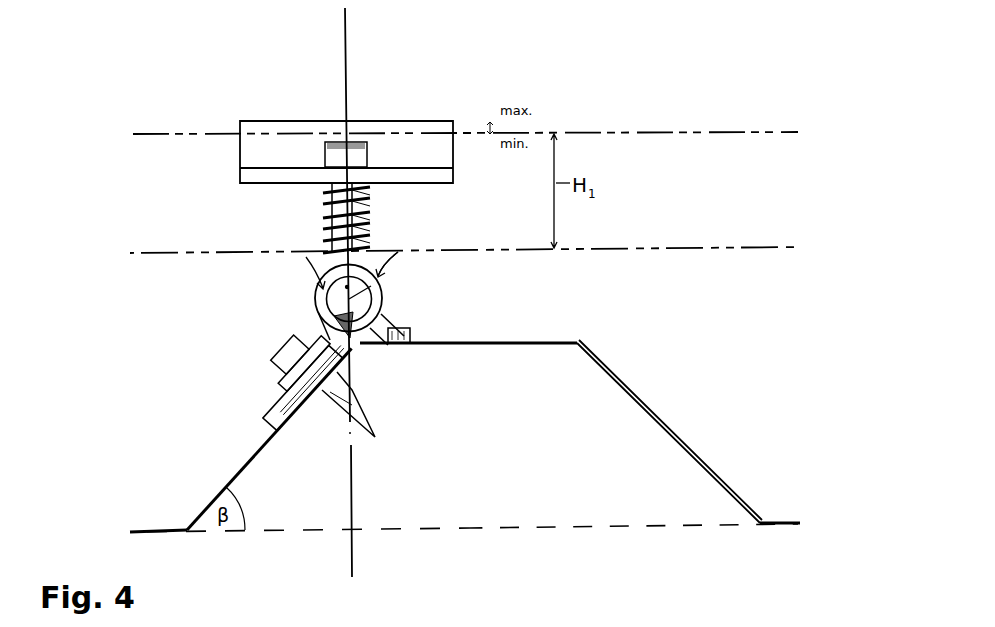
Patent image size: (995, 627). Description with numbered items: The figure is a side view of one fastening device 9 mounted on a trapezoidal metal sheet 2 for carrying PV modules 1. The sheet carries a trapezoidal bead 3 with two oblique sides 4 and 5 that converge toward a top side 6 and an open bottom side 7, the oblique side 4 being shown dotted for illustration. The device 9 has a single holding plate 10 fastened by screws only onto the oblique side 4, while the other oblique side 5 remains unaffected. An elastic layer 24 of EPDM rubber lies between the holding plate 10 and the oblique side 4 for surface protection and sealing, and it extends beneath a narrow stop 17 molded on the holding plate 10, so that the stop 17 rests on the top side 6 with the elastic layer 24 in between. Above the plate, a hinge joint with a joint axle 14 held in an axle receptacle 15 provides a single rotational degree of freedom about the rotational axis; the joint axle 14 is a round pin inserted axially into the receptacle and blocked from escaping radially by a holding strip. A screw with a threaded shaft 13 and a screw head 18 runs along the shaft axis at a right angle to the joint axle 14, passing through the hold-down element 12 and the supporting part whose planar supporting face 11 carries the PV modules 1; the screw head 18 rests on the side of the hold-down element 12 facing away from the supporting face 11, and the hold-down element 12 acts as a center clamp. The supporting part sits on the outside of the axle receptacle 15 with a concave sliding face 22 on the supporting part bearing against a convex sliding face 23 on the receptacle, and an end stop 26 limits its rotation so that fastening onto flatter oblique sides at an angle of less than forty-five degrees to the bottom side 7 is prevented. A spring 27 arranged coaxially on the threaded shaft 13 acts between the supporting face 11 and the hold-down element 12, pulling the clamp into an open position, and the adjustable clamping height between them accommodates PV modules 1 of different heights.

The PV module 1 is at (610, 130).
The trapezoidal metal sheet 2 is at (382, 300).
The trapezoidal bead 3 is at (480, 432).
The oblique side 4 is at (233, 487).
The oblique side 5 is at (668, 427).
The top side 6 is at (540, 343).
The bottom side 7 is at (585, 528).
The device 9 is at (227, 224).
The holding plate 10 is at (268, 400).
The supporting face 11 is at (370, 197).
The hold-down element 12 is at (405, 120).
The threaded shaft 13 is at (372, 212).
The joint axle 14 is at (330, 310).
The axle receptacle 15 is at (392, 318).
The stop 17 is at (405, 330).
The screw head 18 is at (362, 140).
The concave circular cylindrical sliding face 22 is at (386, 265).
The convex circular cylindrical sliding face 23 is at (386, 265).
The elastic layer 24 is at (297, 420).
The end stop 26 is at (320, 282).
The spring 27 is at (325, 216).